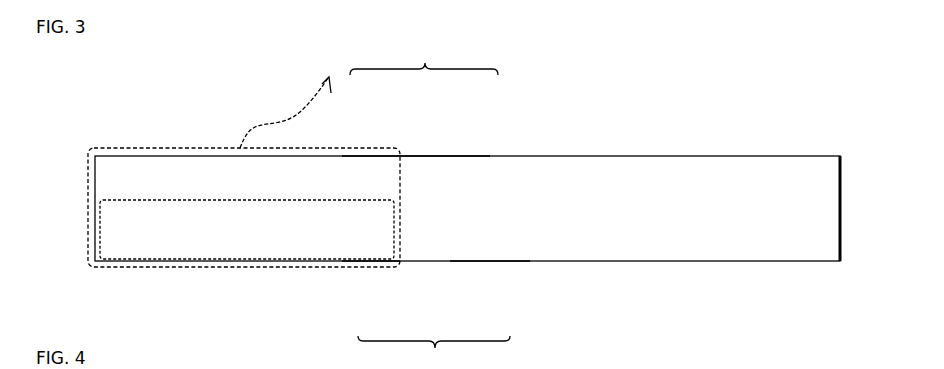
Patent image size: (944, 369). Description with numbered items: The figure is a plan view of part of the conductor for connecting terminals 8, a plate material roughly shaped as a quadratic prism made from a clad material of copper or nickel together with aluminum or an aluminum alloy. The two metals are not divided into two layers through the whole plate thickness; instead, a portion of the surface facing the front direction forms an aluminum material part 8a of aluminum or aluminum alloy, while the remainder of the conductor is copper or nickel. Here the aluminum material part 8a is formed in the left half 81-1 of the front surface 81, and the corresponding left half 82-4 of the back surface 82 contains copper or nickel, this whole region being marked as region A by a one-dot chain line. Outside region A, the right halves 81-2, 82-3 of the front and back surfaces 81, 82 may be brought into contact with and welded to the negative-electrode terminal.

The conductor for connecting terminals 8 is at (512, 157).
The aluminum material part 8a is at (235, 233).
The back surface 82 is at (424, 55).
The right half of the back surface 82-3 is at (490, 157).
The left half of the back surface 82-4 is at (342, 157).
The front surface 81 is at (434, 352).
The left half of the front surface 81-1 is at (342, 259).
The right half of the front surface 81-2 is at (530, 259).